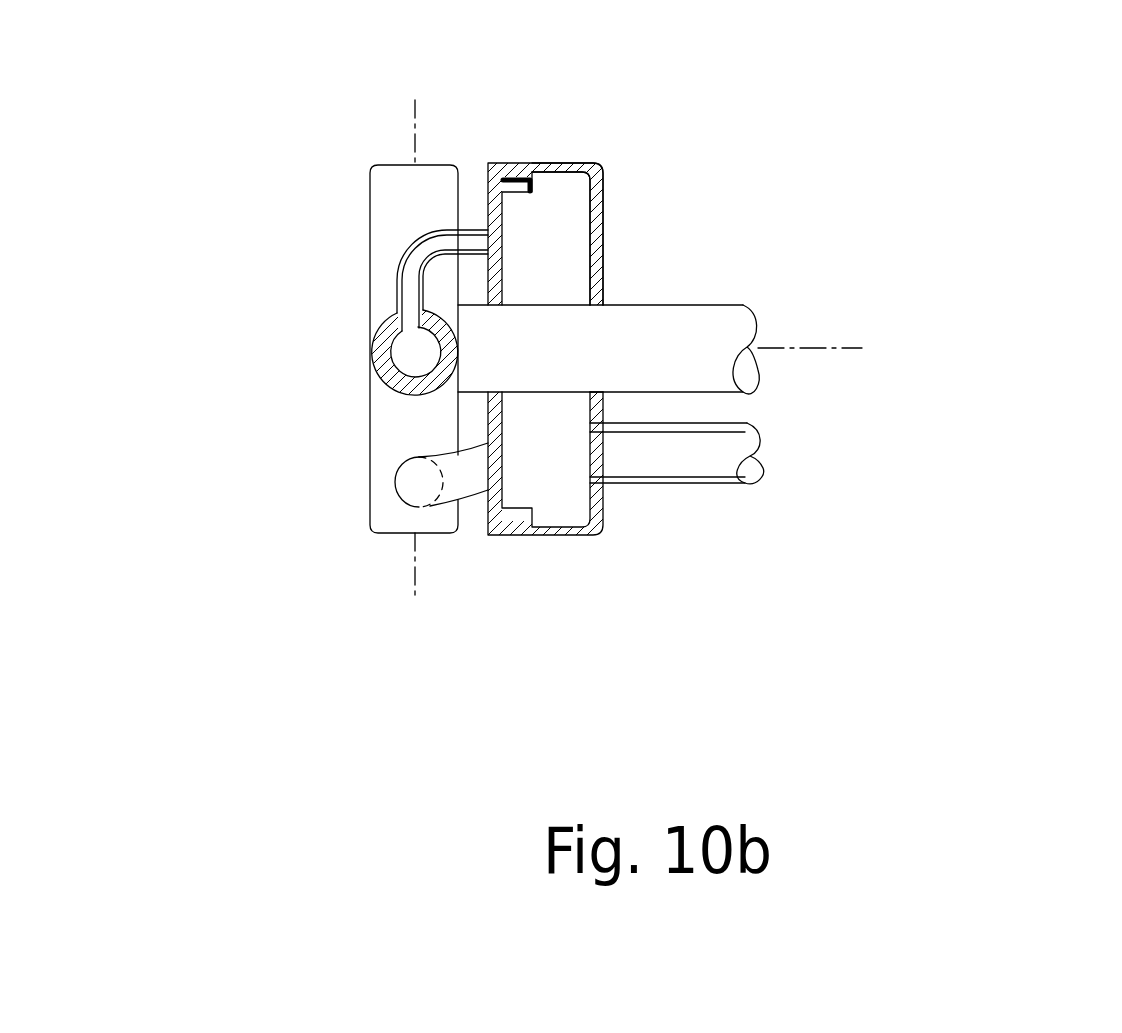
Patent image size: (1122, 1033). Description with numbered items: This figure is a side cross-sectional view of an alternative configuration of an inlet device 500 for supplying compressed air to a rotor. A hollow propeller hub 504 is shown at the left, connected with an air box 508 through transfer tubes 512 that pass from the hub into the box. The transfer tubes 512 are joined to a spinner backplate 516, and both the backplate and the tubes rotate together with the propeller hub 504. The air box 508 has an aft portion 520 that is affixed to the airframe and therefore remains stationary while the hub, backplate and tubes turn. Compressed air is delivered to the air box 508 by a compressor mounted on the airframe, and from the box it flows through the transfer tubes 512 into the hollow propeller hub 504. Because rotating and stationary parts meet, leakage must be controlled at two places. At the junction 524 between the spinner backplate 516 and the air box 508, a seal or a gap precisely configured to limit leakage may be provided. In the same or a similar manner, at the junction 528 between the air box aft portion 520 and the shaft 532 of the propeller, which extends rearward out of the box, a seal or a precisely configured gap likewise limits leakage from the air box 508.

The inlet device 500 is at (975, 573).
The hollow propeller hub 504 is at (370, 457).
The air box 508 is at (608, 170).
The transfer tubes 512 is at (470, 500).
The spinner backplate 516 is at (476, 180).
The aft portion of the air box 520 is at (605, 253).
The junction 524 is at (503, 172).
The junction 528 is at (607, 394).
The shaft 532 is at (712, 305).